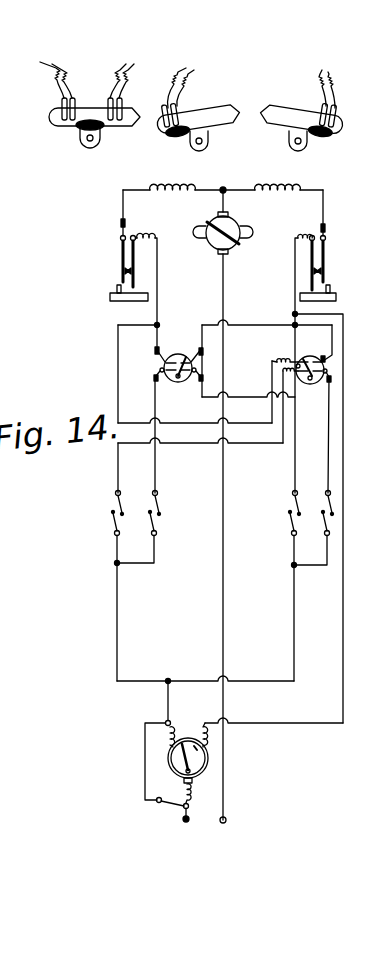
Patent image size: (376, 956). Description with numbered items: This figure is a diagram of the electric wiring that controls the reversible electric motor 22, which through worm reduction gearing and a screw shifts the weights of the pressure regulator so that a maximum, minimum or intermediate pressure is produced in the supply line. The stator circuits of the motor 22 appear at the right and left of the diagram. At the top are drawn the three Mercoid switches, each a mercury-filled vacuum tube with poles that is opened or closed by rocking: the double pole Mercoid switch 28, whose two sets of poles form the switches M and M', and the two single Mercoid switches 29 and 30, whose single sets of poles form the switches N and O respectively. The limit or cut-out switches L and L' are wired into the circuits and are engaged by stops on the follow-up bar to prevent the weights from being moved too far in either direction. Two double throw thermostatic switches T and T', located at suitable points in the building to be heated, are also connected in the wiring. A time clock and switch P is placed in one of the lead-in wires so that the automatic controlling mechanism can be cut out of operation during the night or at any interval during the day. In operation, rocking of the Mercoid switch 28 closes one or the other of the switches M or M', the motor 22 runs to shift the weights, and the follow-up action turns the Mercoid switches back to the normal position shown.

The electric motor 22 is at (216, 244).
The double pole Mercoid switch 28 is at (90, 105).
The single Mercoid switch 29 is at (198, 106).
The single Mercoid switch 30 is at (301, 106).
The limit or cut-out switch L is at (125, 257).
The limit or cut-out switch L' is at (324, 341).
The double throw thermostatic switch T is at (178, 353).
The double throw thermostatic switch T' is at (301, 414).
The switch M is at (95, 586).
The switch N is at (145, 528).
The switch M' is at (277, 586).
The switch O is at (313, 529).
The time clock and switch P is at (244, 751).